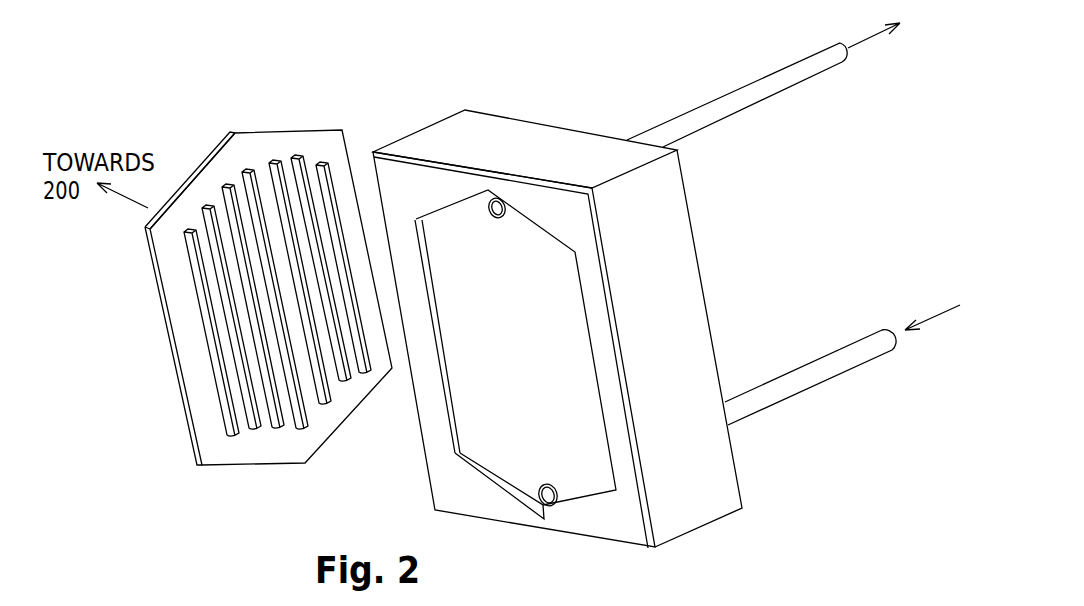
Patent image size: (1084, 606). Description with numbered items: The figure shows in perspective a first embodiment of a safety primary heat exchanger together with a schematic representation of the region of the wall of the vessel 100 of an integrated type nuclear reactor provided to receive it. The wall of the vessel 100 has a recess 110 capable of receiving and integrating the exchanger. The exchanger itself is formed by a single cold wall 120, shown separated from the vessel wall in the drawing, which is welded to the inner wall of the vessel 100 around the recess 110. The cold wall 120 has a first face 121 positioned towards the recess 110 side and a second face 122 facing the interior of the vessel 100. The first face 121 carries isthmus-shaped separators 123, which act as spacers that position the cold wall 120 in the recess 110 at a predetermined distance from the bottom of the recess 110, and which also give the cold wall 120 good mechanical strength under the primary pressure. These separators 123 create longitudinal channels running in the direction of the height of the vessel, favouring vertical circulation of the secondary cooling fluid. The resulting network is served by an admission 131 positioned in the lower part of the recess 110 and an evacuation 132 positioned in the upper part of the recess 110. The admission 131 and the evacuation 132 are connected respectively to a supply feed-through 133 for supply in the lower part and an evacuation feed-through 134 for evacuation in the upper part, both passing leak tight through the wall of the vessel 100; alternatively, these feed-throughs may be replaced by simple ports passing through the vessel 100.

The vessel 100 is at (654, 309).
The recess 110 is at (482, 331).
The cold wall 120 is at (232, 331).
The first face 121 is at (218, 173).
The second face 122 is at (168, 415).
The separators 123 is at (202, 352).
The admission 131 is at (538, 497).
The evacuation 132 is at (480, 196).
The supply feed-through 133 is at (795, 387).
The evacuation feed-through 134 is at (737, 103).